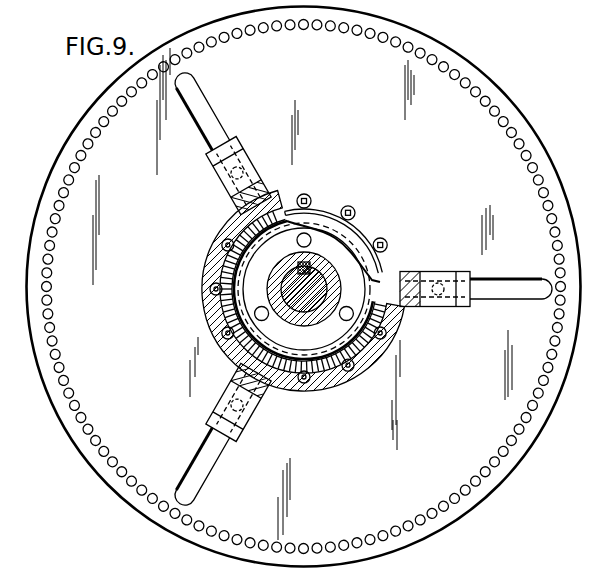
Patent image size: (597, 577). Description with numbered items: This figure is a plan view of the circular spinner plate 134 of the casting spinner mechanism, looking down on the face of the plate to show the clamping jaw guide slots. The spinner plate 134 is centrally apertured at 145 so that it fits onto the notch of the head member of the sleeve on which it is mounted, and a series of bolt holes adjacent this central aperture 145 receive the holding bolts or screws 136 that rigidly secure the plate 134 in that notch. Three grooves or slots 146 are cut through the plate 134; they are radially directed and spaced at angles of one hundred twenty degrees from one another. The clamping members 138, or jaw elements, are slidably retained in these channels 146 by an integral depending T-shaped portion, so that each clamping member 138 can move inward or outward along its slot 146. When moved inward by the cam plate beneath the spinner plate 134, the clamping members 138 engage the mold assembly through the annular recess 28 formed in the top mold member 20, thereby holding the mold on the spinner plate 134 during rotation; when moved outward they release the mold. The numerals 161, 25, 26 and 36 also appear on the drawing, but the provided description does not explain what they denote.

The spinner plate 134 is at (512, 101).
The ring of perforations 161 is at (527, 155).
The grooves or slots 146 is at (511, 290).
The clamping members 138 is at (447, 306).
The bolts or screws 136 is at (350, 208).
The central aperture 145 is at (360, 236).
The hatched ring 25 is at (222, 277).
The top mold member 20 is at (215, 298).
The inner ring 26 is at (217, 312).
The annular recess 28 is at (258, 299).
The cable 36 is at (320, 286).